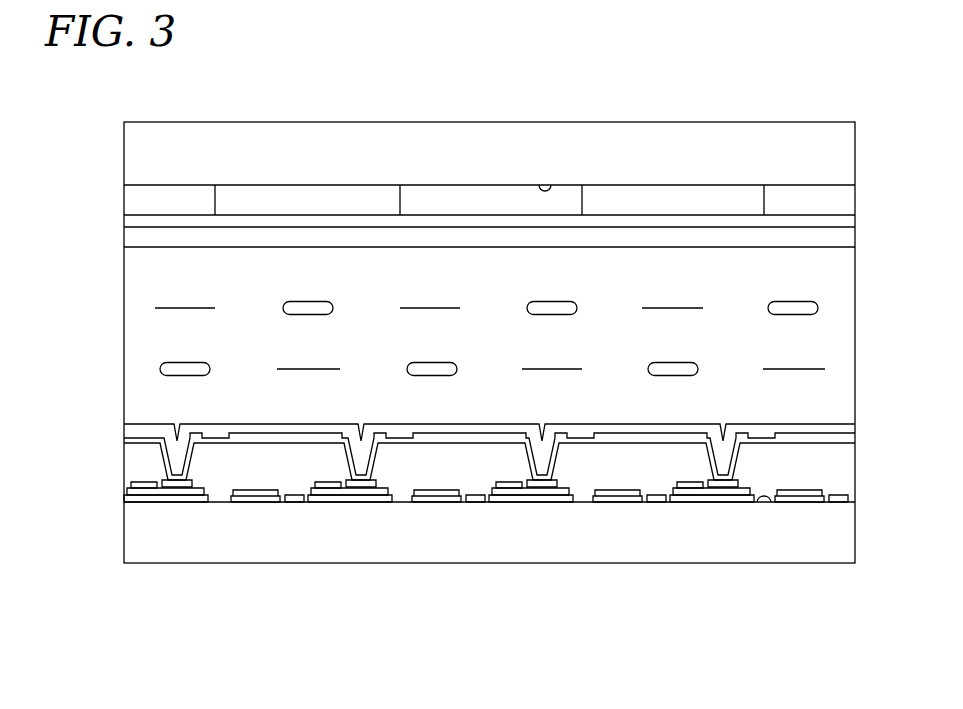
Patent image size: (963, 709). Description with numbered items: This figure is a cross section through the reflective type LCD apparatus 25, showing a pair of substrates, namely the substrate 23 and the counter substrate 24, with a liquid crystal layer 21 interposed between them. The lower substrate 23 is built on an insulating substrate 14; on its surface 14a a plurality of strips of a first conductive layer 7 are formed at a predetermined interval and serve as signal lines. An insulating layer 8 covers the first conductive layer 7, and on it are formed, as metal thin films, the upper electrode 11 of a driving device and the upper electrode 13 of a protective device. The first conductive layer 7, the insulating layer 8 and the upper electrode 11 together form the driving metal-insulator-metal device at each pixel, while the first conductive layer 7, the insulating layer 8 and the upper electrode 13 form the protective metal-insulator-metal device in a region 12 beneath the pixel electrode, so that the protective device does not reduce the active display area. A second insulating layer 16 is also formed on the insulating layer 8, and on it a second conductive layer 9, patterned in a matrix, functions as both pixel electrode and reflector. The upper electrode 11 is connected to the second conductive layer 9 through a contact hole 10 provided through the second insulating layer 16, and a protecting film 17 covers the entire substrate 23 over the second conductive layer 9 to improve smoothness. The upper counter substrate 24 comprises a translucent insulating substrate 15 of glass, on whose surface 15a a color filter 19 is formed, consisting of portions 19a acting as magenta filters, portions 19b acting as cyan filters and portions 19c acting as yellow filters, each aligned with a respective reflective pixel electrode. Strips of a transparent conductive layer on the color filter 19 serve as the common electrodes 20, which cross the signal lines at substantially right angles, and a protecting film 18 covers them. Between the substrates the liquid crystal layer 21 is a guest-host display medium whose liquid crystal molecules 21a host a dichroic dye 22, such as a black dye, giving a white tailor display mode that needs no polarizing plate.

The reflective type LCD apparatus 25 is at (450, 82).
The counter substrate 24 is at (70, 125).
The insulating substrate 15 is at (143, 160).
The surface of insulating substrate 15a is at (552, 185).
The color filter 19 is at (137, 205).
The magenta filter portion 19a is at (190, 205).
The cyan filter portion 19b is at (313, 200).
The yellow filter portion 19c is at (482, 195).
The common electrode 20 is at (130, 225).
The protecting film 18 is at (130, 238).
The liquid crystal layer 21 is at (140, 340).
The liquid crystal molecules 21a is at (558, 305).
The dichroic dye 22 is at (440, 305).
The contact hole 10 is at (364, 410).
The substrate 23 is at (70, 390).
The protecting film 17 is at (131, 425).
The second conductive layer 9 is at (128, 440).
The second insulating layer 16 is at (137, 460).
The upper electrode of driving device 11 is at (375, 500).
The insulating layer 8 is at (130, 493).
The first conductive layer 7 is at (144, 503).
The upper electrode of protective device 13 is at (326, 503).
The region 12 is at (283, 508).
The insulating substrate 14 is at (373, 548).
The surface of insulating substrate 14a is at (765, 494).